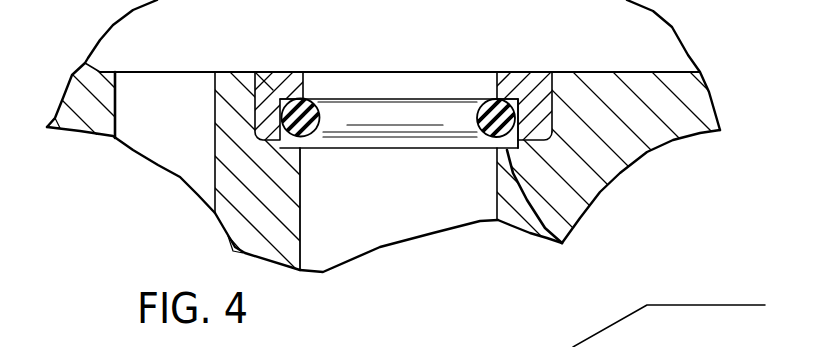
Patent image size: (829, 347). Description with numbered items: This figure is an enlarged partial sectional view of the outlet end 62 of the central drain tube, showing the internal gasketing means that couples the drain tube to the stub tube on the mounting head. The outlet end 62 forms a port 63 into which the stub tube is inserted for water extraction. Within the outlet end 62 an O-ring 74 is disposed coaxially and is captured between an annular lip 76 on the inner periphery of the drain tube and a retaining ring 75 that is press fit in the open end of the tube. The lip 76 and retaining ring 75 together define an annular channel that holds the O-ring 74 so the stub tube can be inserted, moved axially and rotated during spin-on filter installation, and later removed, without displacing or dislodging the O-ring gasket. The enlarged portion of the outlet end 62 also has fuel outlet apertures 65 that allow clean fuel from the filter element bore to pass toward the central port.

The outlet end 62 is at (667, 152).
The port 63 is at (340, 97).
The fuel outlet apertures 65 is at (163, 92).
The O-ring 74 is at (477, 120).
The retaining ring 75 is at (530, 88).
The annular lip 76 is at (565, 242).